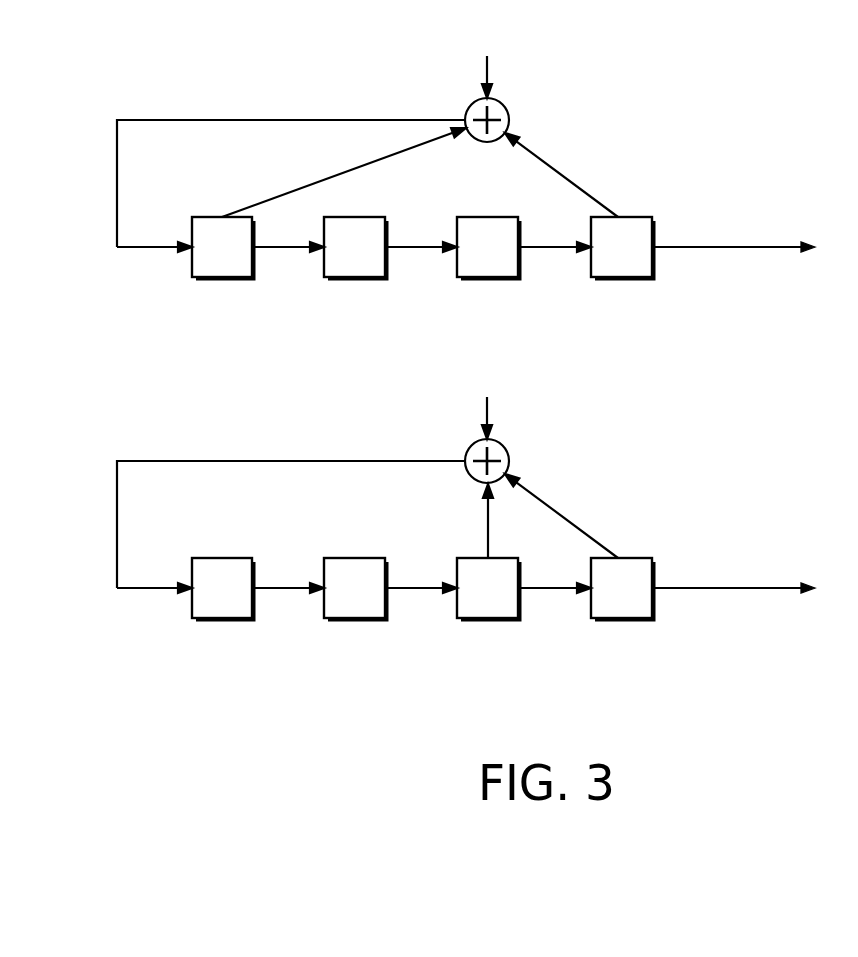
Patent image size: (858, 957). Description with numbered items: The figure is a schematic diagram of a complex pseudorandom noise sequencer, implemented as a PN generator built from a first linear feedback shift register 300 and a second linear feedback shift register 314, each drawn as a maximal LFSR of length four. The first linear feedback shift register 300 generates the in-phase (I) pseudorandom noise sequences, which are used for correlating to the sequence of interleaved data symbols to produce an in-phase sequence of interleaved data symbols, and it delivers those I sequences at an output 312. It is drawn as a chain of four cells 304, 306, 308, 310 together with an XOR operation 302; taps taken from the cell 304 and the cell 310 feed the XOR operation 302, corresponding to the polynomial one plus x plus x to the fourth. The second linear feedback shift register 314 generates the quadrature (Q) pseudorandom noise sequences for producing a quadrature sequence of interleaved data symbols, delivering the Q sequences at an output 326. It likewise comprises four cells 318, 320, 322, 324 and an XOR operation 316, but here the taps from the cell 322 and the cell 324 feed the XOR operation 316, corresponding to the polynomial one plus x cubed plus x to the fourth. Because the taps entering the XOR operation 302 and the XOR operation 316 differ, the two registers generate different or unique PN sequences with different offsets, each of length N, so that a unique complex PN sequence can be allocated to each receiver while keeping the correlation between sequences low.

The first linear feedback shift register 300 is at (94, 78).
The XOR operation 302 is at (468, 106).
The cell 304 is at (222, 277).
The cell 306 is at (355, 277).
The cell 308 is at (488, 277).
The cell 310 is at (622, 277).
The output 312 is at (767, 248).
The second linear feedback shift register 314 is at (94, 419).
The XOR operation 316 is at (468, 447).
The cell 318 is at (222, 618).
The cell 320 is at (355, 618).
The cell 322 is at (488, 618).
The cell 324 is at (622, 618).
The output 326 is at (733, 589).